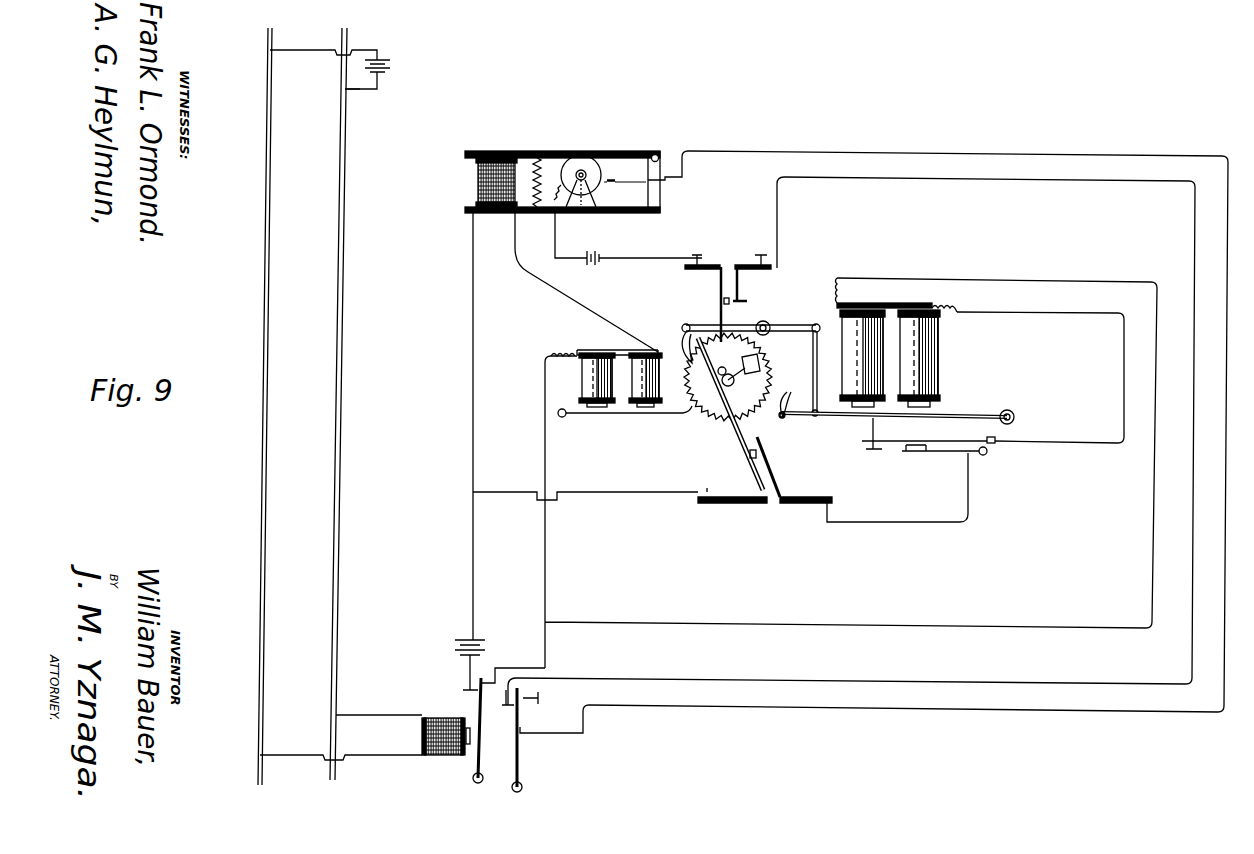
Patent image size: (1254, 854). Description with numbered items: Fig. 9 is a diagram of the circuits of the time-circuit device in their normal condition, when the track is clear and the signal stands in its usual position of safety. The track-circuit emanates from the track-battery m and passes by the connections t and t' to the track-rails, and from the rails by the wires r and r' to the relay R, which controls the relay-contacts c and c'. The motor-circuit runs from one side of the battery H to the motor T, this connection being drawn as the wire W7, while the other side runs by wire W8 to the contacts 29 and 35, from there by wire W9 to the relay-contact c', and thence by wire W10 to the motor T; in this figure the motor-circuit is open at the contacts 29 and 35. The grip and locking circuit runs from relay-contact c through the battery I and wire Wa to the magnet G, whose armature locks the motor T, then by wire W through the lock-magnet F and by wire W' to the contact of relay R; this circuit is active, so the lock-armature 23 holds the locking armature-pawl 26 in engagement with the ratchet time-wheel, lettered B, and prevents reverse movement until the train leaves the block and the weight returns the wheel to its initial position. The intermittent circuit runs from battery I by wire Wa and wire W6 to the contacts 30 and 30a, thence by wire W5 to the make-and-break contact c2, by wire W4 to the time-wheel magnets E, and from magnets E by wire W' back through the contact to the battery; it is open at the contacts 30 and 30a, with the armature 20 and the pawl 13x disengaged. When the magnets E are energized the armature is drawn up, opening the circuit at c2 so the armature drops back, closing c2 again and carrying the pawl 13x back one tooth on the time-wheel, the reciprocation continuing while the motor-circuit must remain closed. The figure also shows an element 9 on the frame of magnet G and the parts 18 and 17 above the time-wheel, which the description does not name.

The track-circuit connection t is at (323, 46).
The track-circuit connection t' is at (353, 102).
The track-battery m is at (380, 74).
The magnet G is at (477, 187).
The resistance coil 9 is at (533, 169).
The motor T is at (583, 164).
The wire W10 is at (874, 442).
The wire W9 is at (848, 441).
The wire W7 is at (571, 235).
The battery H is at (594, 269).
The wire W8 is at (652, 252).
The contact 29 is at (717, 307).
The contact 35 is at (740, 290).
The arm 18 is at (751, 333).
The lever 17 is at (812, 352).
The ratchet wheel B is at (728, 377).
The contact 30 is at (752, 470).
The contact 30a is at (791, 470).
The wire W6 is at (590, 487).
The wire Wa is at (479, 426).
The battery I is at (449, 659).
The relay-contact c is at (509, 725).
The relay-contact c' is at (522, 740).
The wire W' is at (833, 473).
The wire W4 is at (980, 373).
The time-wheel magnet E is at (938, 357).
The armature 20 is at (840, 419).
The pawl 13x is at (784, 421).
The make-and-break contact c2 is at (944, 476).
The wire W5 is at (893, 512).
The lock-magnet F is at (619, 378).
The wire W is at (586, 282).
The locking armature-pawl 26 is at (676, 404).
The armature 23 is at (657, 419).
The relay R is at (462, 708).
The wire r is at (379, 706).
The wire r' is at (341, 766).